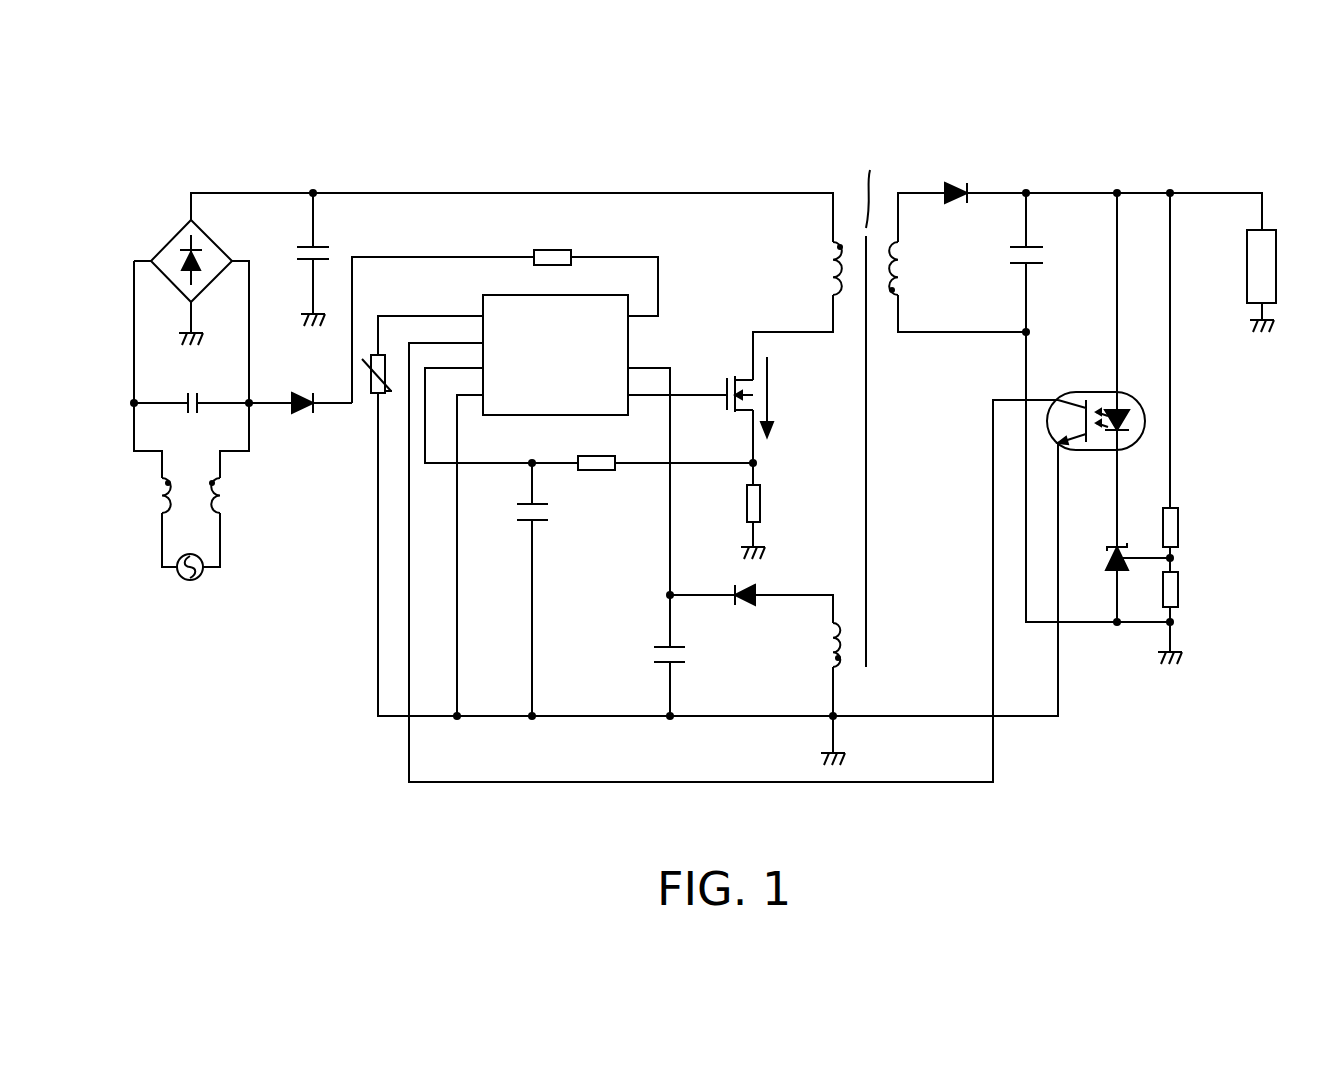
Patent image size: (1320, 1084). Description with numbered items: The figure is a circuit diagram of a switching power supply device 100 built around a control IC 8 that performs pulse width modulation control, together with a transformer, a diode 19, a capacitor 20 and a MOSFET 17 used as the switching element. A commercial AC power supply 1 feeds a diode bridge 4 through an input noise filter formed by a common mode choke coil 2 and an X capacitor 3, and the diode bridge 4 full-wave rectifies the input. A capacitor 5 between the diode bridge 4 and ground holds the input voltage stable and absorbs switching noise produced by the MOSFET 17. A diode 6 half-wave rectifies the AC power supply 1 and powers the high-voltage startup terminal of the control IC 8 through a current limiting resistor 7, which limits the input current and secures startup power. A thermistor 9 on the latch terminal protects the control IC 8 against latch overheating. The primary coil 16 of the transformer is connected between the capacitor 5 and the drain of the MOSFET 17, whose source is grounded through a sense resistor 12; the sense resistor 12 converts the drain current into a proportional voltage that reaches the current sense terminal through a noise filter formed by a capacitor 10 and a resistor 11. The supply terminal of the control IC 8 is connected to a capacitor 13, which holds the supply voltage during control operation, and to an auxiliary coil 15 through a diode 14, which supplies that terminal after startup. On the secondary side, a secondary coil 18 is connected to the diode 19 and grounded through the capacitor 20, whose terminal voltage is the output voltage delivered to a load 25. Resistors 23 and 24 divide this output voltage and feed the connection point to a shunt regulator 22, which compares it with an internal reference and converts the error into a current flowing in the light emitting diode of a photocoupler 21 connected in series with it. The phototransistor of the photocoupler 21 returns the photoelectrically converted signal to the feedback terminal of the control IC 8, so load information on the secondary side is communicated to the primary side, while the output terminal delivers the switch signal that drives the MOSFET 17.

The switching power supply device 100 is at (712, 140).
The commercial AC power supply 1 is at (190, 580).
The common mode choke coil 2 is at (220, 500).
The X capacitor 3 is at (190, 392).
The diode bridge 4 is at (171, 240).
The capacitor 5 is at (295, 253).
The diode 6 is at (299, 392).
The current limiting resistor 7 is at (570, 248).
The control IC 8 is at (483, 298).
The thermistor 9 is at (386, 360).
The capacitor 10 is at (515, 512).
The resistor 11 is at (588, 454).
The sense resistor 12 is at (763, 500).
The capacitor 13 is at (652, 657).
The diode 14 is at (750, 590).
The auxiliary coil 15 is at (832, 640).
The primary coil 16 is at (843, 266).
The MOSFET 17 is at (741, 375).
The secondary coil 18 is at (890, 266).
The diode 19 is at (957, 190).
The capacitor 20 is at (1045, 252).
The photocoupler 21 is at (1098, 392).
The shunt regulator 22 is at (1112, 547).
The resistor 23 is at (1182, 527).
The resistor 24 is at (1182, 590).
The load 25 is at (1245, 262).